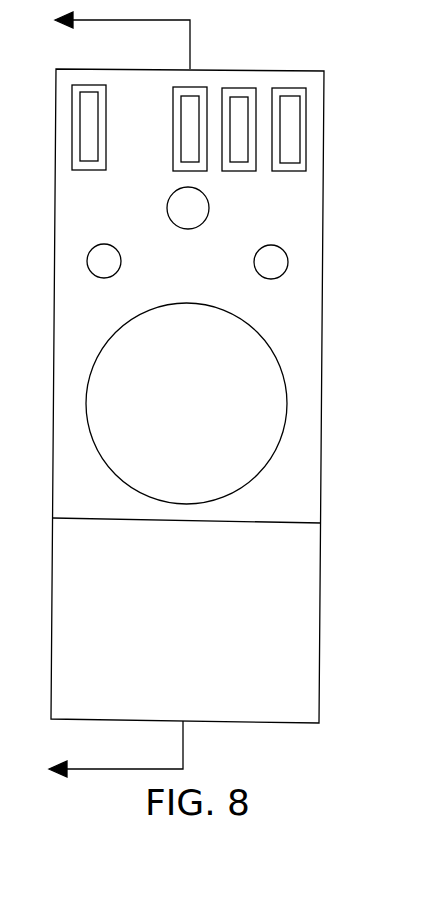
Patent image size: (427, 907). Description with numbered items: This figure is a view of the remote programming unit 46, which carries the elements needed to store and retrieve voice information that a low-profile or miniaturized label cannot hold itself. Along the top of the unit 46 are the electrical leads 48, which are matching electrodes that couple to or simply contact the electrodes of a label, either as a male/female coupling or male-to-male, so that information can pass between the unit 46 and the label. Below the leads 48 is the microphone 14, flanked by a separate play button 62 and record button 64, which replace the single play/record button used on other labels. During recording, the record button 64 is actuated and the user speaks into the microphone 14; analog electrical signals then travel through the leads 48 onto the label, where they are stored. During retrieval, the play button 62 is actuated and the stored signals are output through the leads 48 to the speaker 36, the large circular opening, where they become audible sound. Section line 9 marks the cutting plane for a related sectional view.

The section line 9- 9 is at (108, 393).
The microphone 14 is at (210, 208).
The speaker 36 is at (287, 406).
The remote programming unit 46 is at (323, 322).
The electrical leads 48 is at (307, 154).
The play button 62 is at (87, 262).
The record button 64 is at (288, 262).